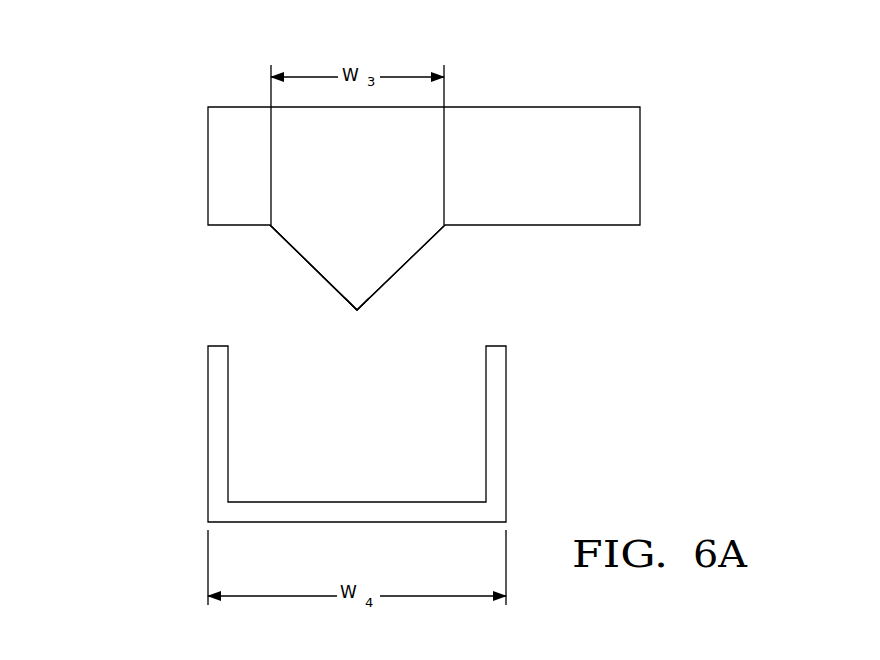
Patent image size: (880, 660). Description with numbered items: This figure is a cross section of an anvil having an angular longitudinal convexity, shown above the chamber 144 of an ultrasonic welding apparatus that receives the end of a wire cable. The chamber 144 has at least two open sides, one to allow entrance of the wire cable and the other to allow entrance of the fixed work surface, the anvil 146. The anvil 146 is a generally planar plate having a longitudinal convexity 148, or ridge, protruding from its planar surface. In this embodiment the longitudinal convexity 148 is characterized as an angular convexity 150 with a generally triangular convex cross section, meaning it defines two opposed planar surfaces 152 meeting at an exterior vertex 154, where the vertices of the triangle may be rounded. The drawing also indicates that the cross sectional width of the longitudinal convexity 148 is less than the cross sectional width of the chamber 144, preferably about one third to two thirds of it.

The chamber 144 is at (184, 487).
The anvil 146 is at (172, 89).
The longitudinal convexity 148 is at (362, 278).
The angular convexity 150 is at (340, 265).
The opposed planar surfaces 152 is at (310, 270).
The exterior vertex 154 is at (357, 310).